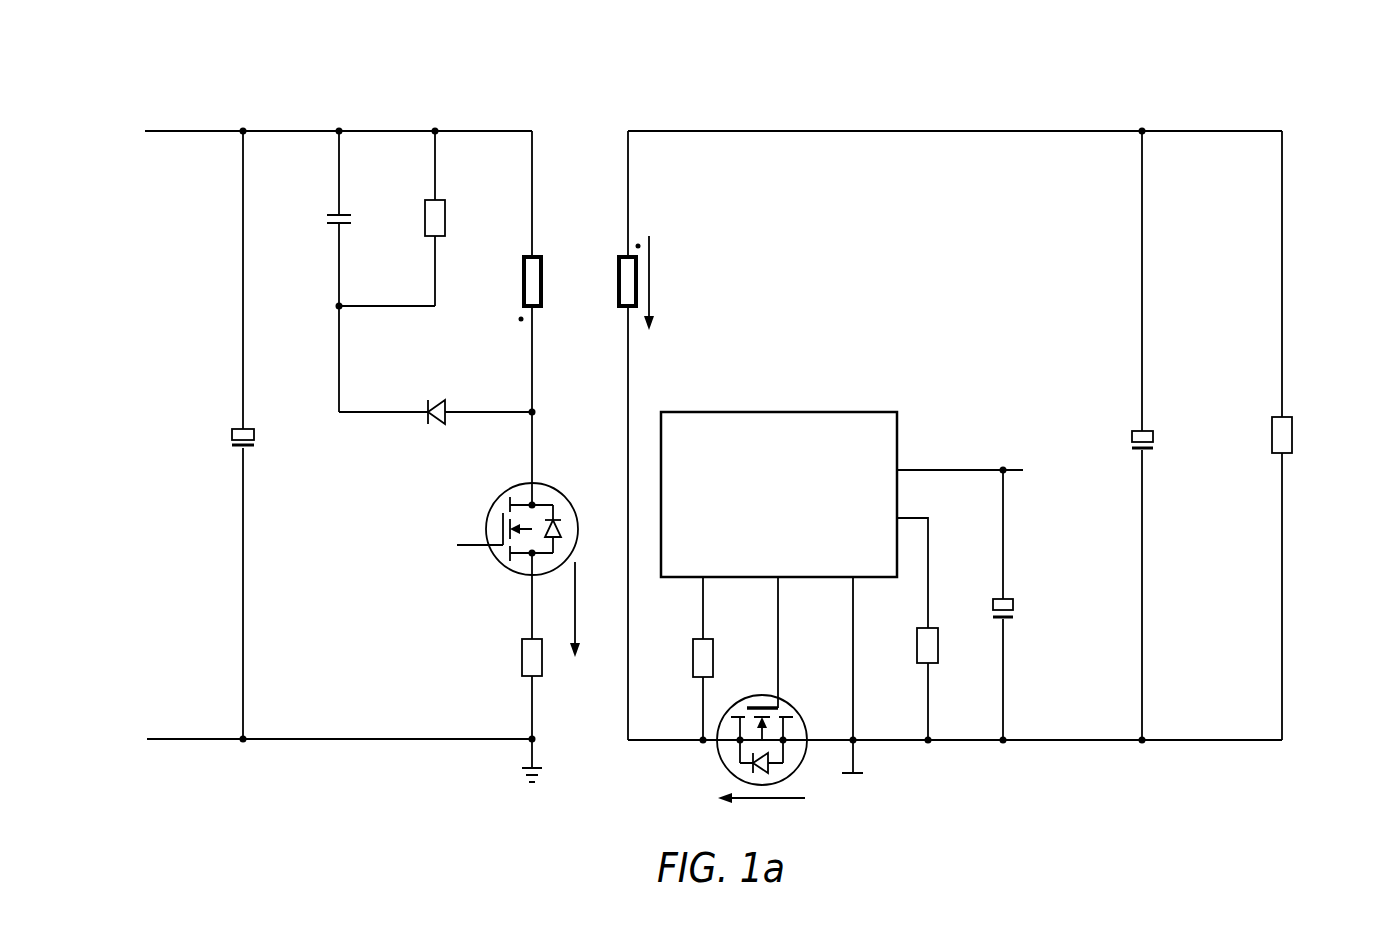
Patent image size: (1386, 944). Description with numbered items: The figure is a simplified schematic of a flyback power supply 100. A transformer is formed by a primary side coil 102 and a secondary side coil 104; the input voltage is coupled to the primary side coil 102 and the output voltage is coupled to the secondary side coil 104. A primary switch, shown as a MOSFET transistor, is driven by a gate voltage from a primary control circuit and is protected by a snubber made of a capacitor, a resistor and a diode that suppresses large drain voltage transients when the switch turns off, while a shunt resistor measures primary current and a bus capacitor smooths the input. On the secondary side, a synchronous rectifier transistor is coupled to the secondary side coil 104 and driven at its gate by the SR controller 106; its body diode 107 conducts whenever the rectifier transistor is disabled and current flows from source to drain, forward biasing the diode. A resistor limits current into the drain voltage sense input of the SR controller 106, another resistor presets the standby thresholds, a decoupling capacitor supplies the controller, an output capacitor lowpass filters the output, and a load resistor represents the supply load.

The flyback converter 100 is at (464, 92).
The primary side coil 102 is at (545, 268).
The secondary side coil 104 is at (616, 298).
The SR controller 106 is at (811, 411).
The body diode 107 is at (755, 692).